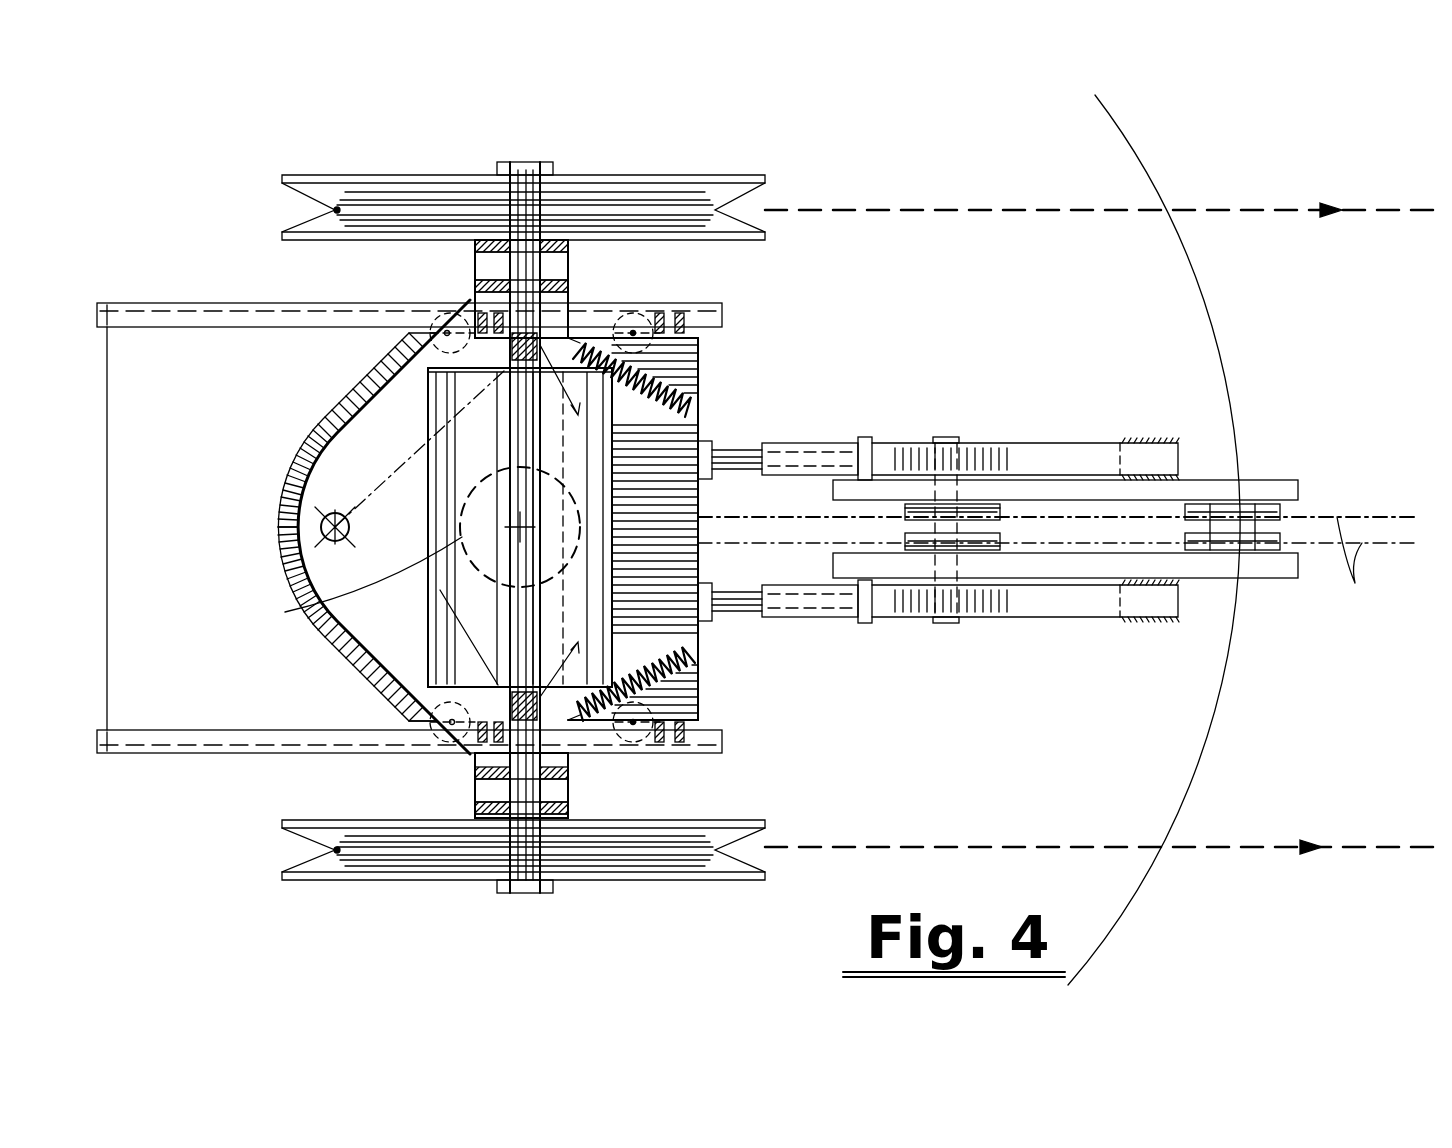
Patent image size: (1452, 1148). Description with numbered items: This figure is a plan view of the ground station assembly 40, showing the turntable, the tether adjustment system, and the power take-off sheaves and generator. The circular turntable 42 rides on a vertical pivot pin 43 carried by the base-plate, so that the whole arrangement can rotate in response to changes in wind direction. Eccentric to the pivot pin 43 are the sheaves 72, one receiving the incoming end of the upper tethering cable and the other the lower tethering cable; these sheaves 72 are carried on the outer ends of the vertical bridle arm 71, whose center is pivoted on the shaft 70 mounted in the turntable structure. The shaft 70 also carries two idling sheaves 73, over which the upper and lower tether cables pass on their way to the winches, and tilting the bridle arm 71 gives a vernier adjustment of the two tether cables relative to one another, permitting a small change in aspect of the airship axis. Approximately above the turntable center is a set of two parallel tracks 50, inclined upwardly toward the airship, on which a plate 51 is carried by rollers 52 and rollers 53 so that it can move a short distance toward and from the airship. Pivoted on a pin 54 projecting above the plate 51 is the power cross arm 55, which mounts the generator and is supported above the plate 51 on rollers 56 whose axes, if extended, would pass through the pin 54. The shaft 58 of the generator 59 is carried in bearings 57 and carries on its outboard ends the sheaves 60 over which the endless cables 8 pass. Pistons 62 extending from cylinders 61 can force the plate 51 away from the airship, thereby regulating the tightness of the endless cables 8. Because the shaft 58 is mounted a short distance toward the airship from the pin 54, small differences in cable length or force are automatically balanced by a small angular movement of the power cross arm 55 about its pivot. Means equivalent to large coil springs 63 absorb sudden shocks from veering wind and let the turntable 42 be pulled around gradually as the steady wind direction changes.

The turntable and power take-off assembly 40 is at (114, 878).
The parallel tracks 50 is at (212, 330).
The sheaves 60 is at (610, 178).
The endless cables 8 is at (895, 210).
The generator shaft 58 is at (530, 893).
The bearings 57 is at (568, 266).
The rollers 52 is at (455, 320).
The rollers 53 is at (480, 318).
The power cross arm 55 is at (345, 412).
The plate 51 is at (292, 467).
The rollers 56 is at (418, 720).
The pivot pin 54 is at (322, 527).
The vertical pivot pin 43 is at (376, 611).
The generator 59 is at (535, 645).
The coil springs 63 is at (665, 395).
The pistons 62 is at (732, 445).
The cylinders 61 is at (820, 445).
The shaft 70 is at (948, 437).
The bridle arm 71 is at (1270, 480).
The idling sheaves 73 is at (1000, 545).
The sheaves 72 is at (1280, 510).
The circular turntable 42 is at (1225, 692).